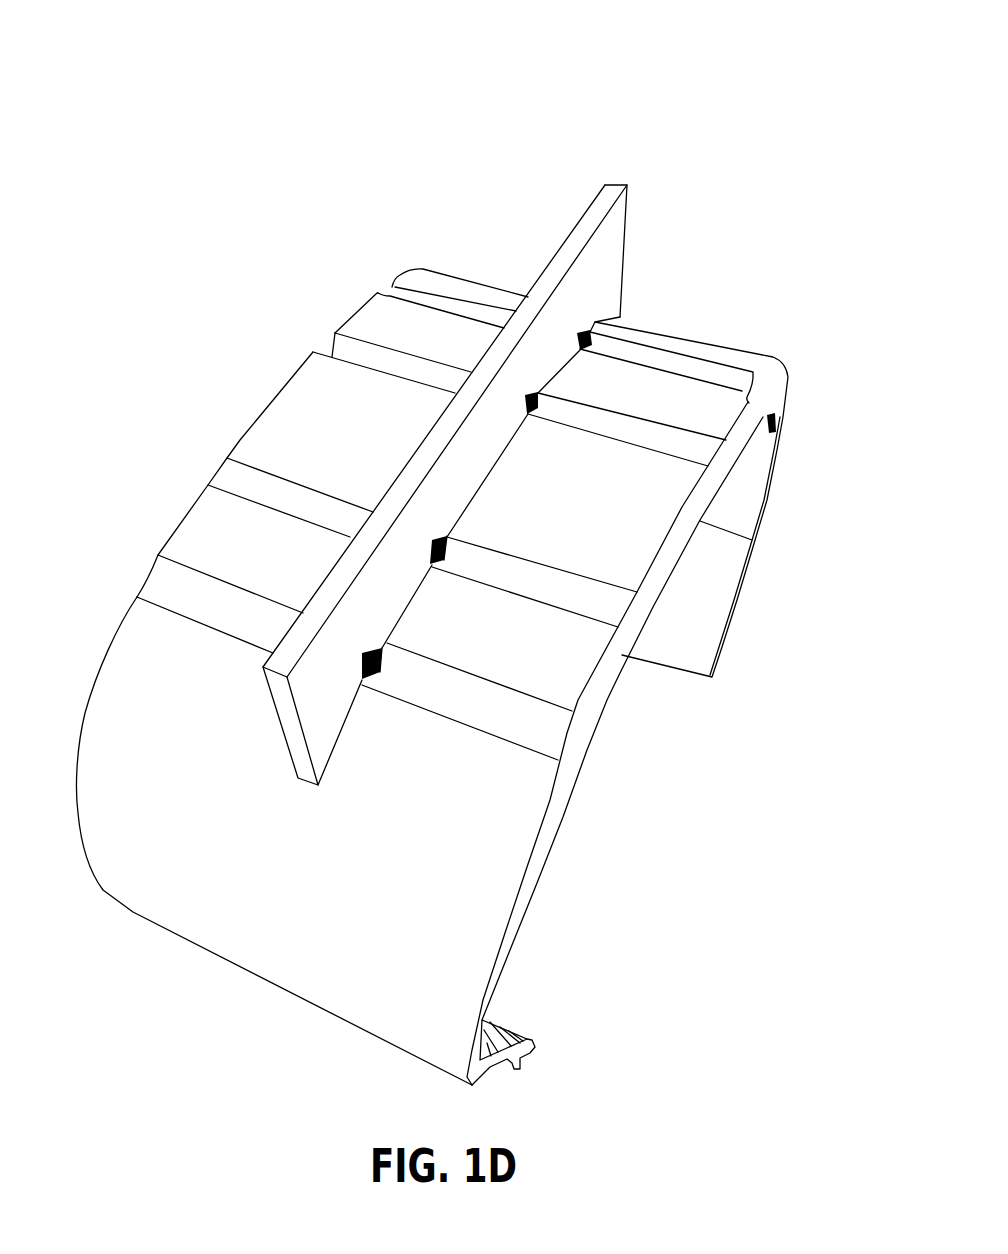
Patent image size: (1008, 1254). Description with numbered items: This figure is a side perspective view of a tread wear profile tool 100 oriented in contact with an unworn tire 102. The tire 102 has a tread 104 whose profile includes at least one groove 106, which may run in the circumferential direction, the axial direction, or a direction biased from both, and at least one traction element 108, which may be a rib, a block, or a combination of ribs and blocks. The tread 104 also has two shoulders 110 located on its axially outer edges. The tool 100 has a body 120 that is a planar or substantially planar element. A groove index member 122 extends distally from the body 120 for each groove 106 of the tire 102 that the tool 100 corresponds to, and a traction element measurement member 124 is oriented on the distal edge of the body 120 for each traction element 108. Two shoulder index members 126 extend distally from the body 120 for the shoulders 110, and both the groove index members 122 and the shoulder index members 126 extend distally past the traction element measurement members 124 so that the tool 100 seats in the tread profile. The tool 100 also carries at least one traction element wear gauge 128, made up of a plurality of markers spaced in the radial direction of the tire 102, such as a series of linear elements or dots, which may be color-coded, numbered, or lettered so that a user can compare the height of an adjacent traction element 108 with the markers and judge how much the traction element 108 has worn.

The tread wear profile tool 100 is at (508, 122).
The tire 102 is at (550, 803).
The tread 104 is at (401, 304).
The groove 106 is at (620, 607).
The traction element 108 is at (682, 505).
The shoulder 110 is at (298, 792).
The body 120 is at (610, 200).
The groove index member 122 is at (390, 643).
The traction element measurement member 124 is at (567, 360).
The shoulder index member 126 is at (323, 743).
The traction element wear gauge 128 is at (447, 545).